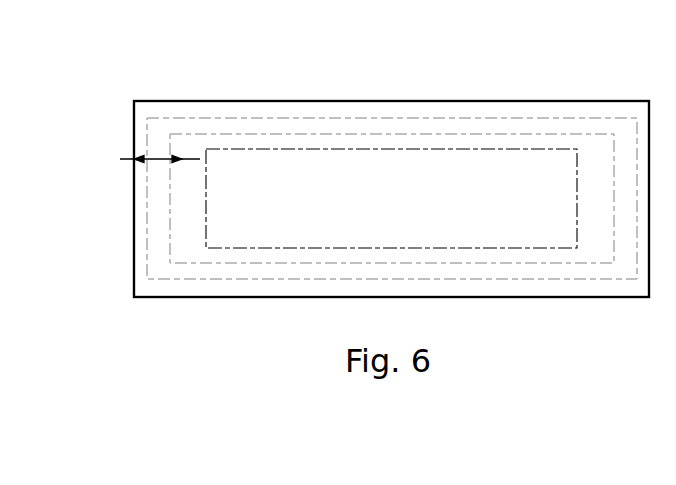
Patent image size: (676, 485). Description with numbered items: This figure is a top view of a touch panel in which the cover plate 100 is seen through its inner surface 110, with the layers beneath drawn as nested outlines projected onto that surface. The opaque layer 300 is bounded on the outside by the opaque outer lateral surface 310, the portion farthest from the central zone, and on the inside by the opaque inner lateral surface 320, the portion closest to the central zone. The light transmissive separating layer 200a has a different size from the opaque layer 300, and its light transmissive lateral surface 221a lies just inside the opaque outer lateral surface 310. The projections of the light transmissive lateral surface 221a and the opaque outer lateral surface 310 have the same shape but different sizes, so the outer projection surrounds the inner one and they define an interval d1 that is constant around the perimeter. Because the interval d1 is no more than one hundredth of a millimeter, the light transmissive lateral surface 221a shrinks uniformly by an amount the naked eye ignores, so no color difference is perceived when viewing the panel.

The cover plate 100 is at (398, 104).
The inner surface 110 is at (623, 101).
The light transmissive separating layer 200a is at (480, 142).
The opaque layer 300 is at (563, 128).
The opaque outer lateral surface 310 is at (146, 233).
The opaque inner lateral surface 320 is at (207, 198).
The light transmissive lateral surface 221a is at (172, 190).
The interval d1 is at (158, 158).